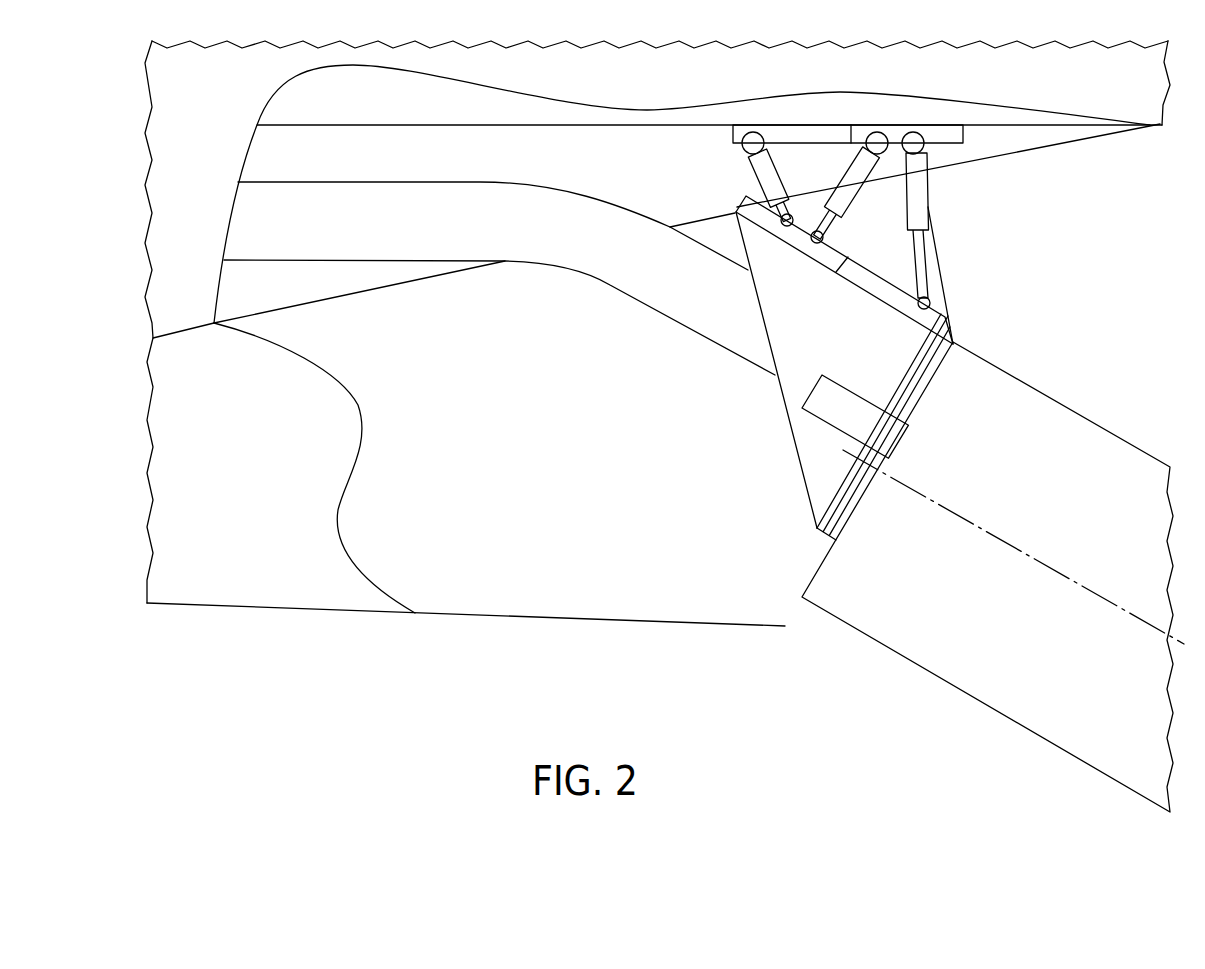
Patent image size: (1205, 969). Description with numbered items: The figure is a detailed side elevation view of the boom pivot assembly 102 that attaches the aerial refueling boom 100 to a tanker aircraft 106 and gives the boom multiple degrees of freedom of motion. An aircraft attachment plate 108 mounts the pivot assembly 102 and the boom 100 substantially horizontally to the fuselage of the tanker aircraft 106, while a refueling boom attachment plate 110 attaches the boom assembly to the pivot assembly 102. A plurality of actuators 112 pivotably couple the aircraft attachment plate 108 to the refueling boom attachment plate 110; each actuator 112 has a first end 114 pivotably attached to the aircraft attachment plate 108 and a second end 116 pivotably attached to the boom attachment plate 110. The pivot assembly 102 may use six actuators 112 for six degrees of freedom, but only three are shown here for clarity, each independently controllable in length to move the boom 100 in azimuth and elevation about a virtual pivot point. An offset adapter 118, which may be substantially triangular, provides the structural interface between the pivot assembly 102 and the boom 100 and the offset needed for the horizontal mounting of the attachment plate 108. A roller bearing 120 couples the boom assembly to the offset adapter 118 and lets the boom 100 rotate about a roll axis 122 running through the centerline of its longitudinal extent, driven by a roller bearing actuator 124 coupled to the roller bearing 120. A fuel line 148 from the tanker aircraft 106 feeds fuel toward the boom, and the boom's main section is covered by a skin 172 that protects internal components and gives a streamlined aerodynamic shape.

The aerial refueling boom 100 is at (993, 577).
The boom pivot assembly 102 is at (857, 187).
The tanker aircraft 106 is at (282, 610).
The aircraft attachment plate 108 is at (730, 135).
The refueling boom attachment plate 110 is at (742, 200).
The actuator 112 is at (782, 178).
The first end 114 is at (746, 132).
The second end 116 is at (811, 250).
The offset adapter 118 is at (793, 453).
The roller bearing 120 is at (815, 531).
The roll axis 122 is at (1046, 564).
The roller bearing actuator 124 is at (800, 400).
The fuel line 148 is at (622, 292).
The skin 172 is at (993, 577).